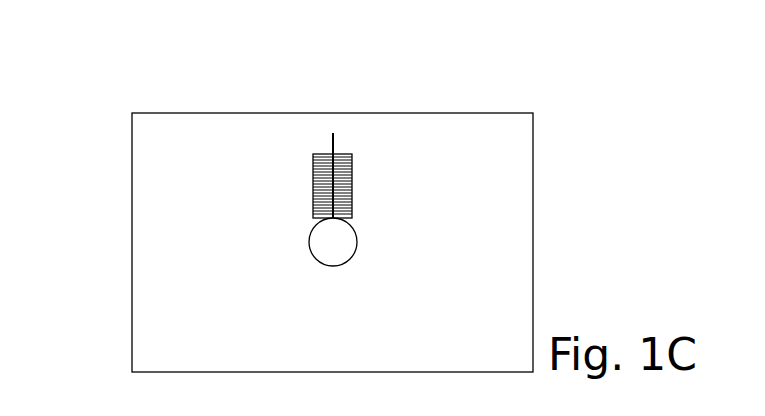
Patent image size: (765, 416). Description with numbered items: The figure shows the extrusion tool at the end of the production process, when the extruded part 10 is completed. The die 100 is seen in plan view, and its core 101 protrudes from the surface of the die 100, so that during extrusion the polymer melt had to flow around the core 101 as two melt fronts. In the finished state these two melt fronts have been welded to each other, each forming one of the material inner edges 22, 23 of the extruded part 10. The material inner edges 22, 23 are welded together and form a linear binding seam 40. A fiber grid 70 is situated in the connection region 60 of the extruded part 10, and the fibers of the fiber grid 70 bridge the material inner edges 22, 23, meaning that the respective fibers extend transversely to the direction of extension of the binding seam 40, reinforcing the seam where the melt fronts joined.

The die 100 is at (388, 237).
The extruded part 10 is at (517, 138).
The binding seam 40 is at (286, 131).
The material inner edge 22 is at (286, 131).
The material inner edge 23 is at (333, 146).
The fiber grid 70 is at (410, 135).
The connection region 60 is at (352, 173).
The core 101 is at (325, 243).